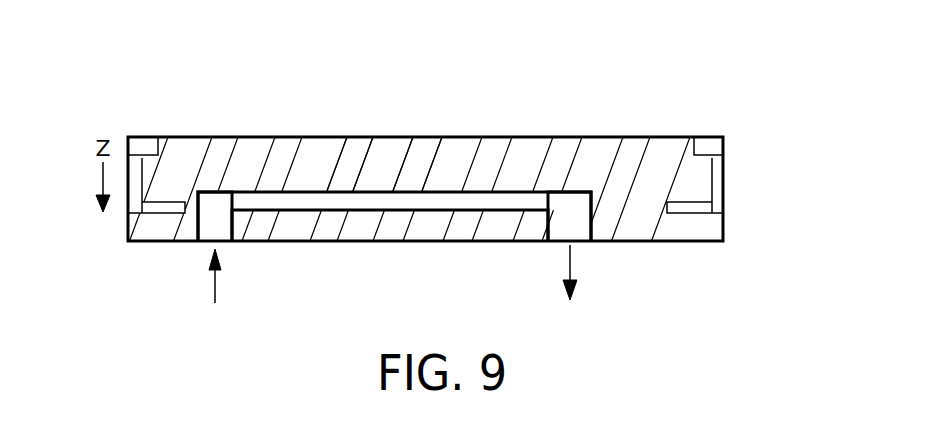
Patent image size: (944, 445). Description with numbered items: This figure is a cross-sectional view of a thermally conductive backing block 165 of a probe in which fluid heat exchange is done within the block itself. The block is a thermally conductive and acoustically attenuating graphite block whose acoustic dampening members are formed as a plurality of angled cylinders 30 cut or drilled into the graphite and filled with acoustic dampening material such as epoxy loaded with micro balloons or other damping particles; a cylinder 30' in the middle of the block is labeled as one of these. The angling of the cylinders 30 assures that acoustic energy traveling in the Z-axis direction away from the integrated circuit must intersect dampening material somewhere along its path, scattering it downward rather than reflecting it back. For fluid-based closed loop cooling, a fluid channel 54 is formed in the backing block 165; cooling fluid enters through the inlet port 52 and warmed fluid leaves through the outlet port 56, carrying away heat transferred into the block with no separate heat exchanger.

The angled cylinders 30 is at (410, 155).
The intermediate substrate layer 30' is at (384, 131).
The inlet port 52 is at (210, 232).
The fluid channel 54 is at (367, 202).
The outlet port 56 is at (580, 230).
The backing block 165 is at (474, 186).